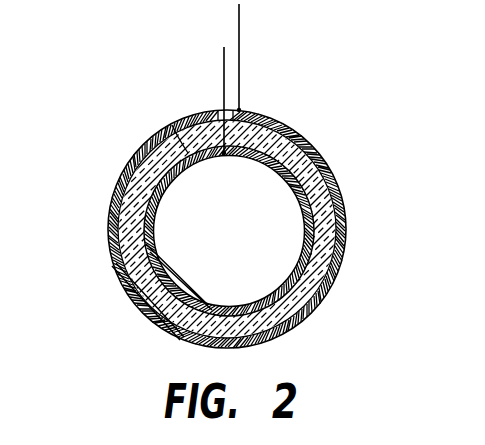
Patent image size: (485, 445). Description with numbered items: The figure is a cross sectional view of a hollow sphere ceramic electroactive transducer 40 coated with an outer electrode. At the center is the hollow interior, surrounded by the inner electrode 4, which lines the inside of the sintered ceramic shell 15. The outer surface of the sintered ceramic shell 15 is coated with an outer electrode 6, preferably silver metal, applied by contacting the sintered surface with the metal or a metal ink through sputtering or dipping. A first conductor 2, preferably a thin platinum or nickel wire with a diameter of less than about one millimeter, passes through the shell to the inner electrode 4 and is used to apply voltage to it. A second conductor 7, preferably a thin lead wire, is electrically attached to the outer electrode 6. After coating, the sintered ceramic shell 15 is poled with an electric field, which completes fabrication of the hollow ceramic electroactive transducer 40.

The hollow ceramic electroactive transducer 40 is at (83, 4).
The first conductor 2 is at (224, 80).
The second conductor 7 is at (244, 47).
The inner electrode 4 is at (178, 127).
The sintered ceramic shell 15 is at (331, 228).
The outer electrode 6 is at (339, 268).